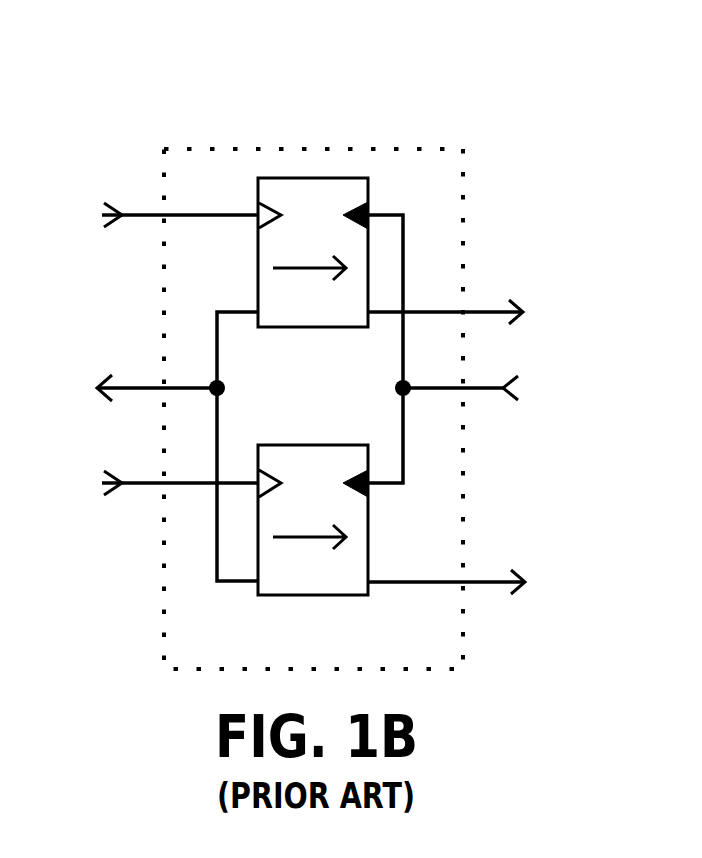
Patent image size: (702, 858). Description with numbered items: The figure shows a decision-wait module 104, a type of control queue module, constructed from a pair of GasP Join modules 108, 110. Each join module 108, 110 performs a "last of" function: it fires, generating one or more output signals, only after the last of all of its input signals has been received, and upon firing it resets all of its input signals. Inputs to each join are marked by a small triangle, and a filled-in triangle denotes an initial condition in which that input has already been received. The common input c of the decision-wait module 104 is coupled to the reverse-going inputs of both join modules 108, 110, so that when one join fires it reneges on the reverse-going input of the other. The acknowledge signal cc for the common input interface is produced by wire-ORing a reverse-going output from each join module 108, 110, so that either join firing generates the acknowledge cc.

The decision-wait module 104 is at (317, 409).
The GasP Join module 108 is at (313, 252).
The GasP Join module 110 is at (313, 520).